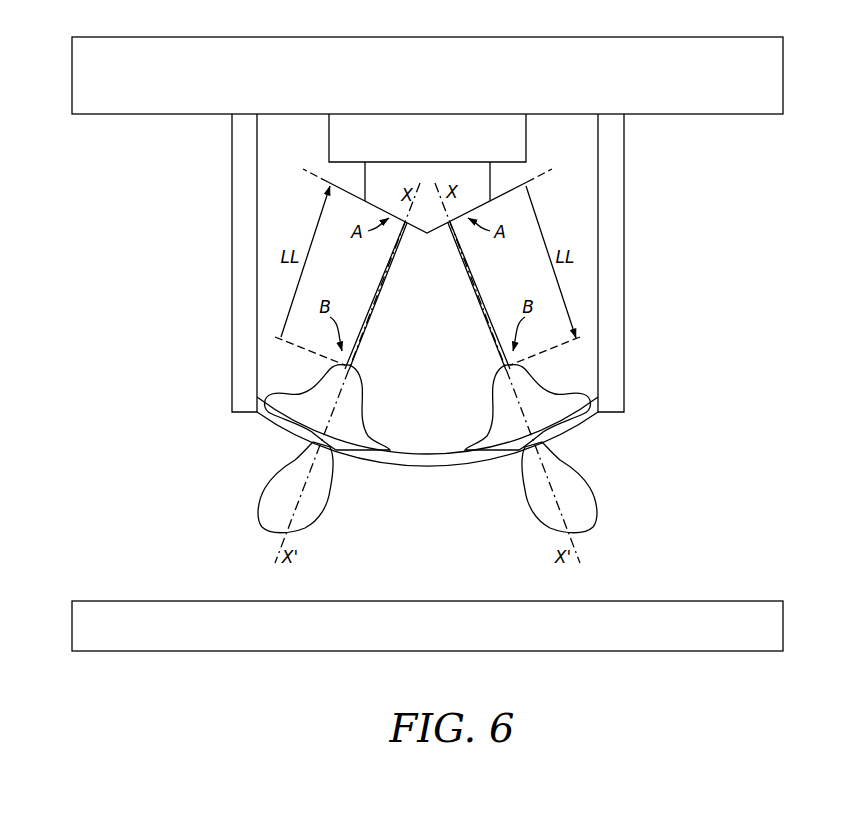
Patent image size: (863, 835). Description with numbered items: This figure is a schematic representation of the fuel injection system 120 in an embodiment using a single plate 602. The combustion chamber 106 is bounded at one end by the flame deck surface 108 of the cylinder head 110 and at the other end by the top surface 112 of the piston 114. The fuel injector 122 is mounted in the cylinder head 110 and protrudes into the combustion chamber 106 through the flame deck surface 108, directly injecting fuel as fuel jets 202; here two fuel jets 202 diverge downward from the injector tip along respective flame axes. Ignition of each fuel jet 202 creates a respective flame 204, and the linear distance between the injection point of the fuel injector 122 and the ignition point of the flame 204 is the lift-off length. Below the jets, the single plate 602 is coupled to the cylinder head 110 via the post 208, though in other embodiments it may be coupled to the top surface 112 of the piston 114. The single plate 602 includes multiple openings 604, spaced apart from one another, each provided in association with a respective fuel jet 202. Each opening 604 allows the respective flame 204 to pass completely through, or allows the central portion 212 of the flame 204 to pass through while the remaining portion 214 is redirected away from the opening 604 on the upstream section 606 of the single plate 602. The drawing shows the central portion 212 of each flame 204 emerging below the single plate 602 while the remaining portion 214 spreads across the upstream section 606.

The cylinder head 110 is at (427, 75).
The fuel injector 122 is at (427, 173).
The flame deck surface 108 is at (743, 114).
The post 208 is at (232, 183).
The fuel injection system 120 is at (636, 297).
The fuel jets 202 is at (363, 340).
The flame 204 is at (319, 371).
The remaining portion of the flame 214 is at (289, 391).
The upstream section of the single plate 606 is at (427, 425).
The single plate 602 is at (465, 472).
The multiple openings 604 is at (313, 432).
The central portion of the flame 212 is at (333, 500).
The combustion chamber 106 is at (428, 580).
The piston 114 is at (427, 626).
The top surface of the piston 112 is at (745, 601).